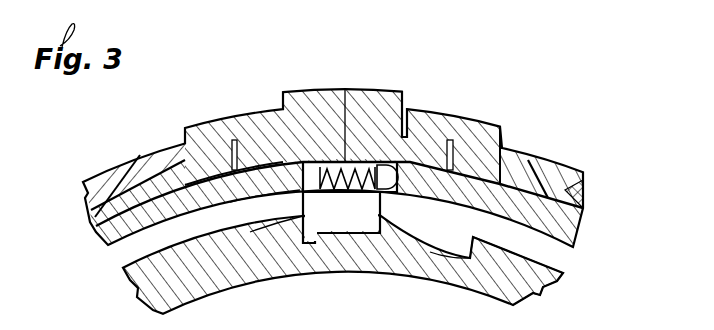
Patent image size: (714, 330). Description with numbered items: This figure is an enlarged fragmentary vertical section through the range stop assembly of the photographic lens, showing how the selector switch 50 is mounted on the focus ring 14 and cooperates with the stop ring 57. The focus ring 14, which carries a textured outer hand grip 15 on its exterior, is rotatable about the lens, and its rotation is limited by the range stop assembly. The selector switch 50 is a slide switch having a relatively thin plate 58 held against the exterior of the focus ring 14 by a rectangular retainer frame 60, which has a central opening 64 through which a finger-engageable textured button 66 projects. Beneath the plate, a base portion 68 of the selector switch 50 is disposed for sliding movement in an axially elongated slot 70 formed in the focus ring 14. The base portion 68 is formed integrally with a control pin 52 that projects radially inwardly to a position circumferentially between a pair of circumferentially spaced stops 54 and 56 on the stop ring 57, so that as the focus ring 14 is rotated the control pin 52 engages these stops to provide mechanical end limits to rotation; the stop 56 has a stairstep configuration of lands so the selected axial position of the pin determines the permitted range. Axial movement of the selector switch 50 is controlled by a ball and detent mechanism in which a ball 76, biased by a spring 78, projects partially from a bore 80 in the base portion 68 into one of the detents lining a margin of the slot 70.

The focus ring 14 is at (570, 235).
The textured outer hand grip 15 is at (572, 189).
The selector switch 50 is at (384, 127).
The control pin 52 is at (343, 228).
The stop 54 is at (430, 262).
The stop 56 is at (315, 245).
The stop ring 57 is at (530, 287).
The plate 58 is at (440, 117).
The retainer frame 60 is at (494, 130).
The central opening 64 is at (286, 95).
The textured button 66 is at (341, 94).
The base portion 68 is at (274, 197).
The slot 70 is at (386, 203).
The ball 76 is at (398, 180).
The spring 78 is at (362, 163).
The bore 80 is at (347, 104).